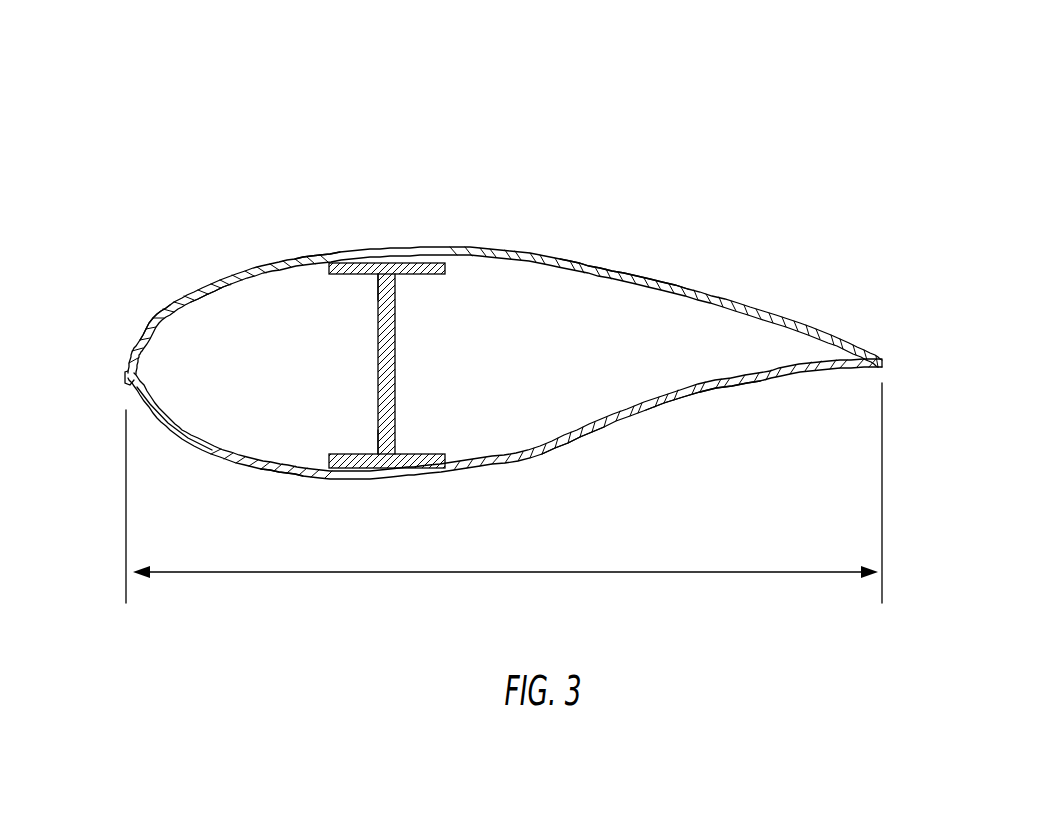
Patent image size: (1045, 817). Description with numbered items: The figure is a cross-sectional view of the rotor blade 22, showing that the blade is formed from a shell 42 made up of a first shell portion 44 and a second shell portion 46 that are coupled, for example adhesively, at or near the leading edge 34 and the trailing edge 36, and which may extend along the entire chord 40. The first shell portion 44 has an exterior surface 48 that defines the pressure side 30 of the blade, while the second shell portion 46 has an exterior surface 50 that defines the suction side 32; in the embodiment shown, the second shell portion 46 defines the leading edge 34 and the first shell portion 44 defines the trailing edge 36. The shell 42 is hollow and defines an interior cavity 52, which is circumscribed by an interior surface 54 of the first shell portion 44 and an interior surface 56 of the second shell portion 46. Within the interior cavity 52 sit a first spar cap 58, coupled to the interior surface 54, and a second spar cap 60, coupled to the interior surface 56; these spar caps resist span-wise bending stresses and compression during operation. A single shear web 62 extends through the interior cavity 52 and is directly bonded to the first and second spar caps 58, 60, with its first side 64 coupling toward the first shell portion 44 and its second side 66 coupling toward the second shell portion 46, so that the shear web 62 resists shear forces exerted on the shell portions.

The rotor blade 22 is at (228, 95).
The pressure side 30 is at (642, 406).
The suction side 32 is at (562, 258).
The leading edge 34 is at (125, 367).
The trailing edge 36 is at (882, 362).
The chord 40 is at (622, 574).
The shell 42 is at (125, 213).
The first shell portion 44 is at (272, 500).
The second shell portion 46 is at (318, 240).
The exterior surface 48 is at (583, 442).
The exterior surface 50 is at (414, 258).
The interior cavity 52 is at (226, 335).
The interior surface 54 is at (706, 388).
The interior surface 56 is at (616, 282).
The first spar cap 58 is at (417, 451).
The second spar cap 60 is at (413, 276).
The shear web 62 is at (377, 390).
The first side 64 is at (365, 437).
The second side 66 is at (362, 284).